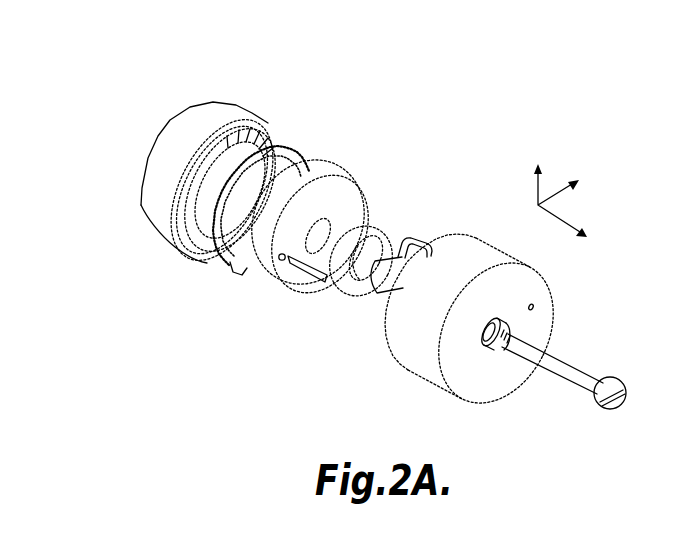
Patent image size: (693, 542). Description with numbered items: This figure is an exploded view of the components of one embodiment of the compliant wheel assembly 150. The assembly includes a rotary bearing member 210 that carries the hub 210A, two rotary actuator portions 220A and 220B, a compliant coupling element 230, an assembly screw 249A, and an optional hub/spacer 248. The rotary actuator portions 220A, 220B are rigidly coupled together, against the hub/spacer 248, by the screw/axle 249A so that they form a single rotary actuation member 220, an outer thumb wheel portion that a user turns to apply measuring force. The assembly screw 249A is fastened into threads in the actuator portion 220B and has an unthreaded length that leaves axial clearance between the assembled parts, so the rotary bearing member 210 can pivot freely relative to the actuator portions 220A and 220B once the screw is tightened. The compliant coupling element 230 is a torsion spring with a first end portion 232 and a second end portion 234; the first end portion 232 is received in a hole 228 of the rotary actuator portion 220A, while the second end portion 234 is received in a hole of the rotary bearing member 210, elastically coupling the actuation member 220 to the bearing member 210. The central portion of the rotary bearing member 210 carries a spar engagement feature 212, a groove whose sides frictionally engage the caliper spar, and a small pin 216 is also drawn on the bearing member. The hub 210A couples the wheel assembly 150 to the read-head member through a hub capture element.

The compliant wheel assembly 150 is at (459, 133).
The rotary bearing member 210 is at (365, 188).
The hub 210A is at (263, 208).
The spar engagement feature 212 is at (233, 268).
The pin 216 is at (281, 262).
The rotary actuation member 220 is at (372, 402).
The rotary actuator portion 220A is at (424, 357).
The rotary actuator portion 220B is at (158, 222).
The hole 228 is at (540, 307).
The compliant coupling element 230 is at (371, 231).
The first end portion 232 is at (429, 250).
The second end portion 234 is at (292, 265).
The hub/spacer 248 is at (378, 280).
The assembly screw 249A is at (554, 376).